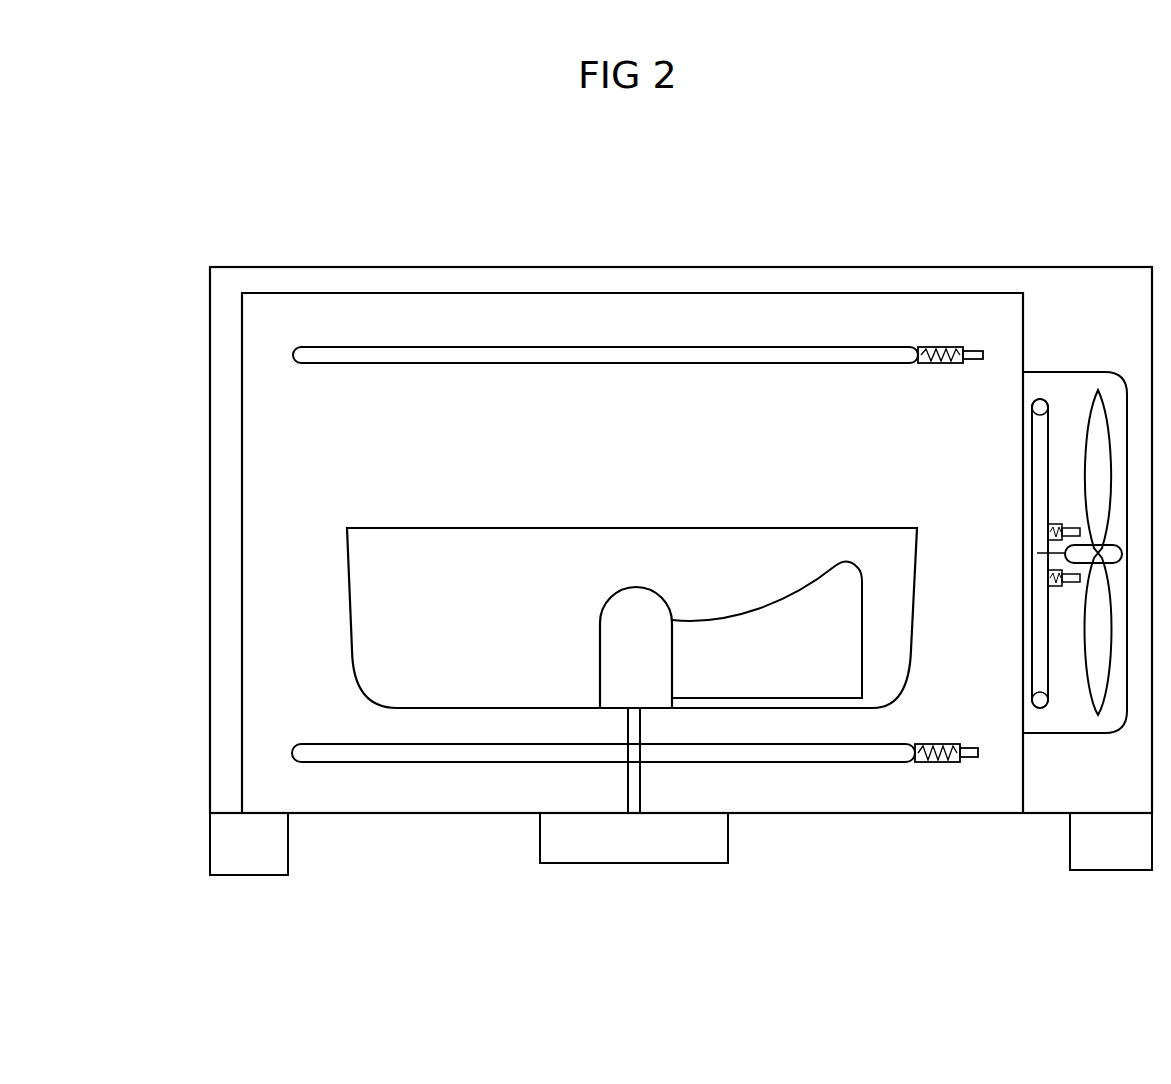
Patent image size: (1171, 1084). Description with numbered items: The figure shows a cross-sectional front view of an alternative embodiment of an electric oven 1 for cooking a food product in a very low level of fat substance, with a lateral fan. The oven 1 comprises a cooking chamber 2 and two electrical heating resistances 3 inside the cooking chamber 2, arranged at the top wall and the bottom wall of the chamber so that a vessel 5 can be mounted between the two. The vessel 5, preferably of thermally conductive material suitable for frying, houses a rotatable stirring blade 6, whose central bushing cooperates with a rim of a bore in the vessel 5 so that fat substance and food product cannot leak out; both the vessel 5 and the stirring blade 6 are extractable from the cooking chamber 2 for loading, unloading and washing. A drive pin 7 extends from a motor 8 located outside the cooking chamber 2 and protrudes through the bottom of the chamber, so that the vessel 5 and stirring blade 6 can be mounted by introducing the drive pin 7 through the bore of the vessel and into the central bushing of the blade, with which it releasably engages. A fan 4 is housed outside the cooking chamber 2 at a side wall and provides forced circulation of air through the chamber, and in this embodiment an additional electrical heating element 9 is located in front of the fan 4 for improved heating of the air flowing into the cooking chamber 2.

The electric oven 1 is at (204, 326).
The cooking chamber 2 is at (296, 459).
The electrical heating resistance 3 is at (389, 343).
The fan 4 is at (1096, 386).
The vessel 5 is at (343, 633).
The rotatable stirring blade 6 is at (798, 672).
The drive pin 7 is at (620, 784).
The motor 8 is at (612, 868).
The additional electrical heating element 9 is at (1024, 447).